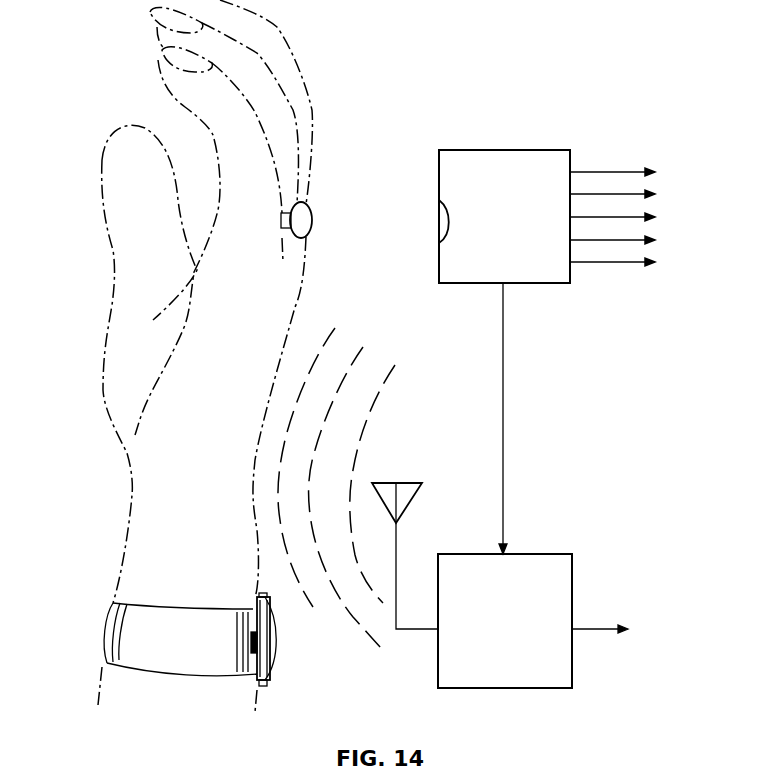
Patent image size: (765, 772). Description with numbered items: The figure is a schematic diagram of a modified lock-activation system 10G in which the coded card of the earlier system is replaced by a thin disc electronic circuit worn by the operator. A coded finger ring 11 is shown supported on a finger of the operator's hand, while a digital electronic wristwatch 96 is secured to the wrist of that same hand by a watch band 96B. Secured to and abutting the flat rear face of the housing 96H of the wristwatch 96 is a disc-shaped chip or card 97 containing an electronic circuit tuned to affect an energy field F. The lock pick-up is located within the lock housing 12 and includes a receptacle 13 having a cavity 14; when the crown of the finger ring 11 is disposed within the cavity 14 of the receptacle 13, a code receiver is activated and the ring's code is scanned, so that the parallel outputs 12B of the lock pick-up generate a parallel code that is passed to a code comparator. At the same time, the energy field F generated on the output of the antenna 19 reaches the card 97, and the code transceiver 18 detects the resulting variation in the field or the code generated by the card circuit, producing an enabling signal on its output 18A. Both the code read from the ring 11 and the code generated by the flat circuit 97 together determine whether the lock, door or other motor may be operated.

The system 10G is at (93, 727).
The coded finger ring 11 is at (311, 208).
The lock housing 12 is at (440, 284).
The parallel outputs 12B is at (587, 263).
The receptacle 13 is at (439, 200).
The cavity 14 is at (442, 228).
The code transceiver 18 is at (553, 682).
The output of code transceiver 18A is at (587, 625).
The antenna 19 is at (410, 483).
The digital electronic wristwatch 96 is at (277, 624).
The watch band 96B is at (105, 652).
The housing of the wristwatch 96H is at (265, 684).
The disc-shaped chip or card 97 is at (260, 677).
The energy field F is at (338, 638).